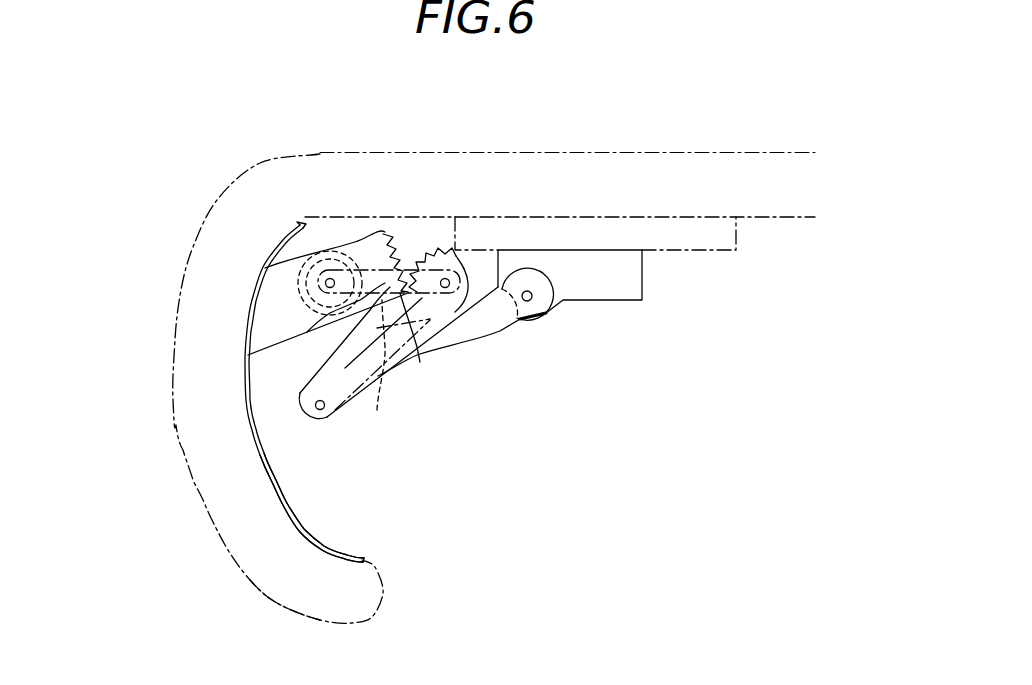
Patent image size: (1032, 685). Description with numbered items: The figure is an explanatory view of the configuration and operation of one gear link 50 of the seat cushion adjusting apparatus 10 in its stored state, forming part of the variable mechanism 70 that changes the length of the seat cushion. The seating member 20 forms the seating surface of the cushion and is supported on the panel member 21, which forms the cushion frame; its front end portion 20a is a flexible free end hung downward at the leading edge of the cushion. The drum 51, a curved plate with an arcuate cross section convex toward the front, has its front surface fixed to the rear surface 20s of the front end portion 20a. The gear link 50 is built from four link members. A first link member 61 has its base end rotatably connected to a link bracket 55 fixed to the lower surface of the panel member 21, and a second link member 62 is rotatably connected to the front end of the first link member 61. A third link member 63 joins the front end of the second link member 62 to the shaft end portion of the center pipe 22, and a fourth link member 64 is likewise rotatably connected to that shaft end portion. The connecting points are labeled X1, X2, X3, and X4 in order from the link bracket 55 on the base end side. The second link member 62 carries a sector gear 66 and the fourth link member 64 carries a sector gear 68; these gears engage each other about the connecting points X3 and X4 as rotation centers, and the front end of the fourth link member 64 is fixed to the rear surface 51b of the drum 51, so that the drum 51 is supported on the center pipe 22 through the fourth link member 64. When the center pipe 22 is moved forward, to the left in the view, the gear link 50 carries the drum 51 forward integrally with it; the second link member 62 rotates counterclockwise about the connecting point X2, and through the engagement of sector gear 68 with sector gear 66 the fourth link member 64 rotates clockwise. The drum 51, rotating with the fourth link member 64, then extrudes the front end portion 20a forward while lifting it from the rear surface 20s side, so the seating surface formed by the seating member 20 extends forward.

The seat cushion adjusting apparatus 10 is at (112, 130).
The seating member 20 is at (676, 153).
The front end portion 20a is at (277, 602).
The rear surface 20s is at (262, 418).
The panel member 21 is at (716, 252).
The center pipe 22 is at (310, 290).
The gear link 50 is at (425, 432).
The drum 51 is at (283, 232).
The rear surface 51b is at (290, 508).
The link bracket 55 is at (641, 300).
The first link member 61 is at (447, 346).
The second link member 62 is at (417, 350).
The third link member 63 is at (398, 358).
The fourth link member 64 is at (364, 243).
The sector gear 66 is at (438, 249).
The sector gear 68 is at (404, 242).
The variable mechanism 70 is at (495, 536).
The connecting point X1 is at (530, 301).
The connecting point X2 is at (322, 410).
The connecting point X3 is at (447, 288).
The connecting point X4 is at (327, 289).